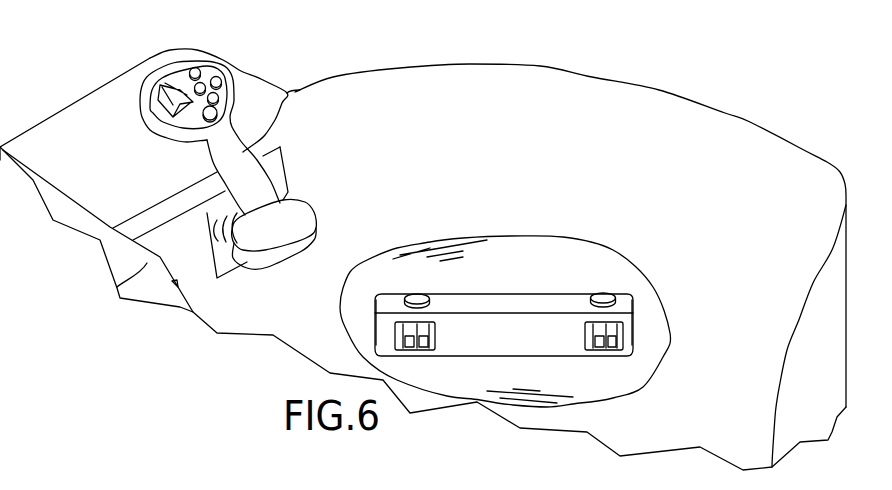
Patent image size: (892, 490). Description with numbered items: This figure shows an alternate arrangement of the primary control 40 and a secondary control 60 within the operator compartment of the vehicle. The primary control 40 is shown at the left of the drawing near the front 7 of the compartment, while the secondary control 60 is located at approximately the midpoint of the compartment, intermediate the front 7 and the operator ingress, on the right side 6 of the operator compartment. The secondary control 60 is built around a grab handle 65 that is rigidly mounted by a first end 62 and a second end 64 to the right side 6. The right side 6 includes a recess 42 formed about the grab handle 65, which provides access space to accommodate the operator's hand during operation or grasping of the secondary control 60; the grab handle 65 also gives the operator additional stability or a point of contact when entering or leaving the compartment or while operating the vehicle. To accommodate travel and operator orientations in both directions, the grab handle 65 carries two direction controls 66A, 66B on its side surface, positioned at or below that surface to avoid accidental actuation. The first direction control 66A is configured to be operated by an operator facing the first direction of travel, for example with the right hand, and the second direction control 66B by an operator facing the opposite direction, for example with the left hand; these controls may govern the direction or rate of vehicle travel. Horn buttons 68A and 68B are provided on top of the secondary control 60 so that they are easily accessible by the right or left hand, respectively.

The right side 6 is at (637, 108).
The front 7 is at (77, 117).
The primary control 40 is at (235, 67).
The recess 42 is at (627, 373).
The secondary control 60 is at (497, 291).
The first end 62 is at (633, 327).
The second end 64 is at (373, 317).
The grab handle 65 is at (527, 300).
The first direction control 66A is at (415, 350).
The second direction control 66B is at (602, 350).
The horn button 68A is at (418, 293).
The horn button 68B is at (603, 294).